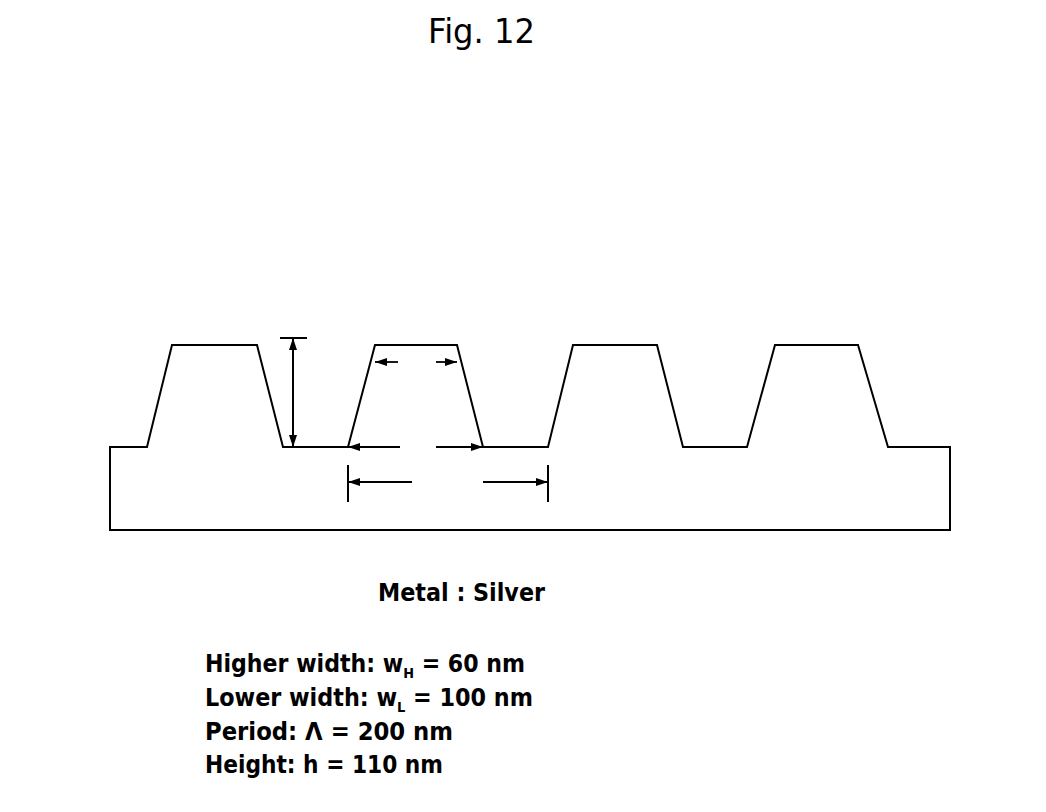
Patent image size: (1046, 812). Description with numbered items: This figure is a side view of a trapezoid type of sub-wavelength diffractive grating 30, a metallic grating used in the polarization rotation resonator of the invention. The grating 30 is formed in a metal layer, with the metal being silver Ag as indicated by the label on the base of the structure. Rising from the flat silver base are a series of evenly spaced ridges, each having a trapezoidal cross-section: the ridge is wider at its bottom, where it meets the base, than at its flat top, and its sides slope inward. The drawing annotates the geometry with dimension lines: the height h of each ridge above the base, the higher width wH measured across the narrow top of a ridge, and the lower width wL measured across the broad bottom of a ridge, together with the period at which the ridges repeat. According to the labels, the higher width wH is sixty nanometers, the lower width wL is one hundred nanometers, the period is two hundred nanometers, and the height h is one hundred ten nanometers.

The trapezoid type of sub-wavelength diffractive grating 30 is at (147, 390).
The height of grating ridges h is at (298, 392).
The higher (top) width of grating ridge wH is at (416, 363).
The lower (bottom) width of grating ridge wL is at (415, 447).
The silver metal layer Ag is at (221, 488).